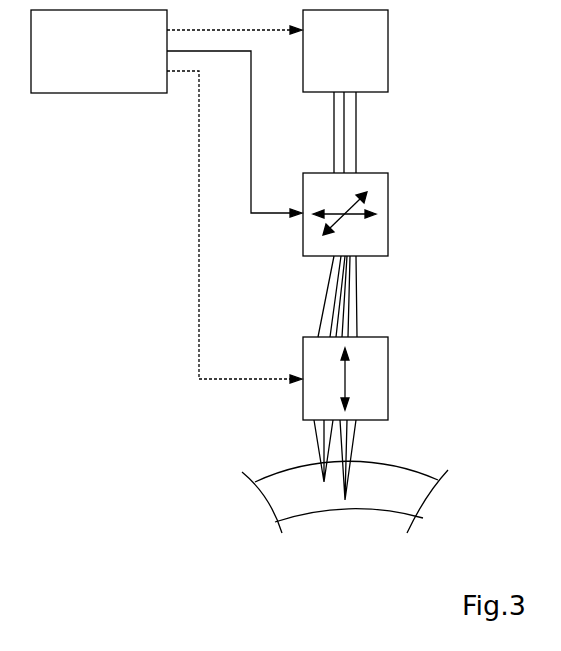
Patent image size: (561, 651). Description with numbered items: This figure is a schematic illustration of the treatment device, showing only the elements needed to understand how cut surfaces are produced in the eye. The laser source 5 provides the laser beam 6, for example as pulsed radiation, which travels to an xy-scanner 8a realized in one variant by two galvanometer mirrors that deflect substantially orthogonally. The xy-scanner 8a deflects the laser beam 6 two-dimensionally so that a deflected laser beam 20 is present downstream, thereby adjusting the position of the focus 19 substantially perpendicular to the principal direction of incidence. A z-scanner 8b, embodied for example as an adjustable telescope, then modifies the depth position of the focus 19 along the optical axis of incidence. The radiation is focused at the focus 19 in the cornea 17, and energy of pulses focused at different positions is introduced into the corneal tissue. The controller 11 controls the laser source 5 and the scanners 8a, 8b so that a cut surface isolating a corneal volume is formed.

The controller 11 is at (112, 93).
The laser source 5 is at (388, 44).
The laser beam 6 is at (358, 125).
The xy-scanner 8a is at (388, 222).
The deflected laser beam 20 is at (343, 295).
The z-scanner 8b is at (388, 388).
The cornea 17 is at (418, 480).
The focus 19 is at (324, 482).